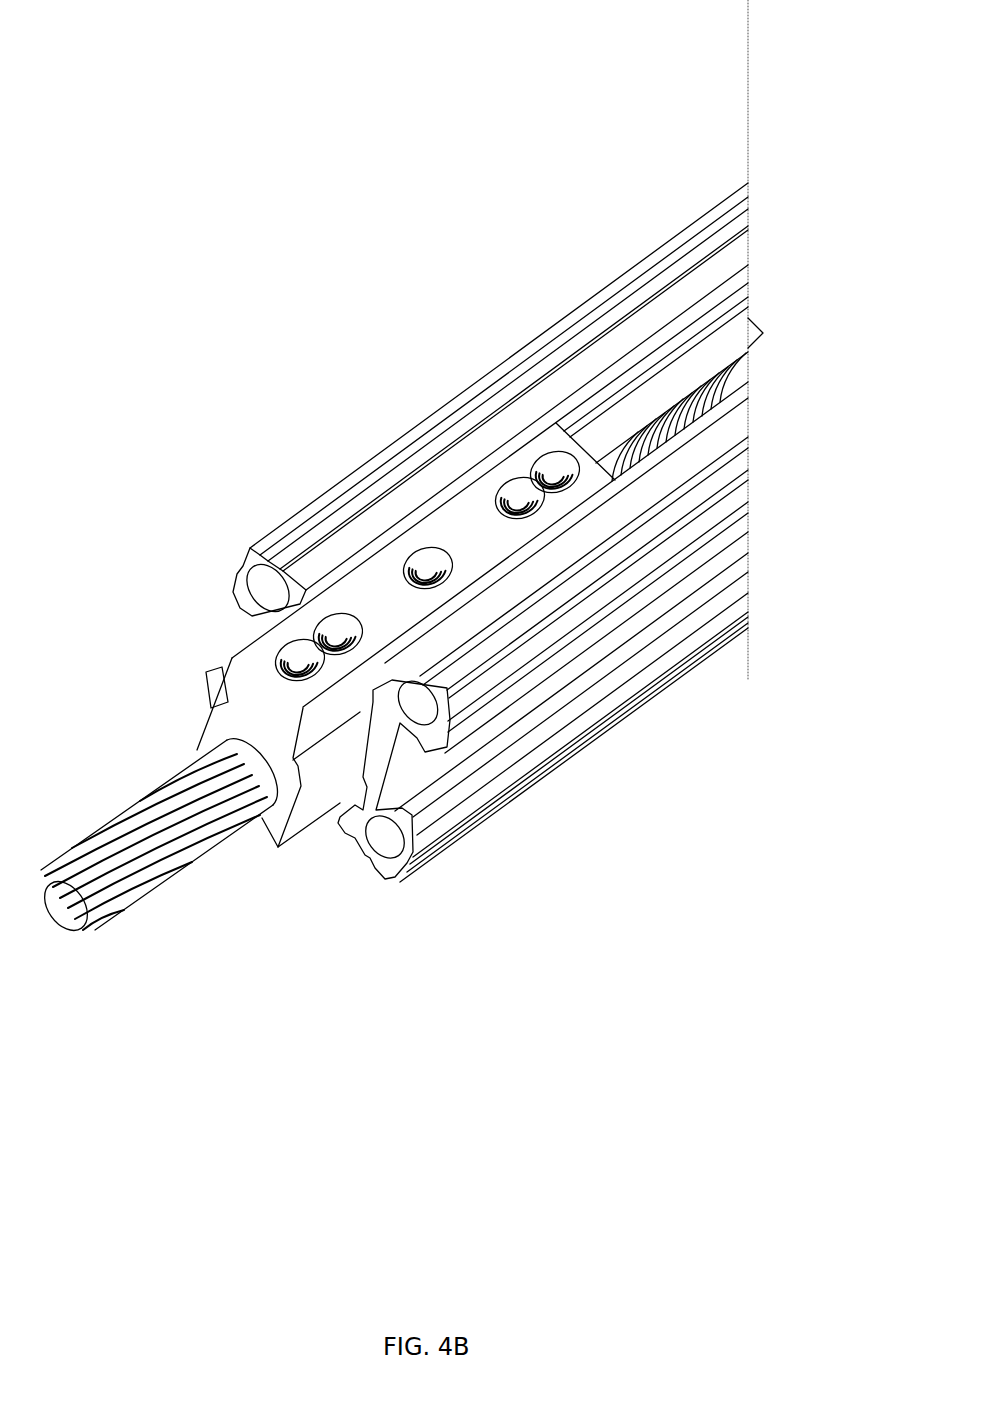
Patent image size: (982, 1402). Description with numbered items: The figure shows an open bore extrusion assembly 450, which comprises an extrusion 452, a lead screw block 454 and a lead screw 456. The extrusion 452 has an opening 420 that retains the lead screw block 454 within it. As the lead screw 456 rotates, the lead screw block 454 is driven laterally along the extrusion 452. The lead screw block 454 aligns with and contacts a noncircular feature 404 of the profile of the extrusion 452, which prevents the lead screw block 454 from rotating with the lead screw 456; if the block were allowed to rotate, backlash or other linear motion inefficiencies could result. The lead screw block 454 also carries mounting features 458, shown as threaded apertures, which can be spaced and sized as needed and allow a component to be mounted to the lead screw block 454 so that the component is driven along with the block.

The open bore extrusion assembly 450 is at (316, 276).
The extrusion 452 is at (393, 497).
The opening 420 is at (610, 426).
The lead screw block 454 is at (243, 687).
The lead screw 456 is at (160, 815).
The mounting features 458 is at (322, 661).
The noncircular feature 404 is at (364, 795).